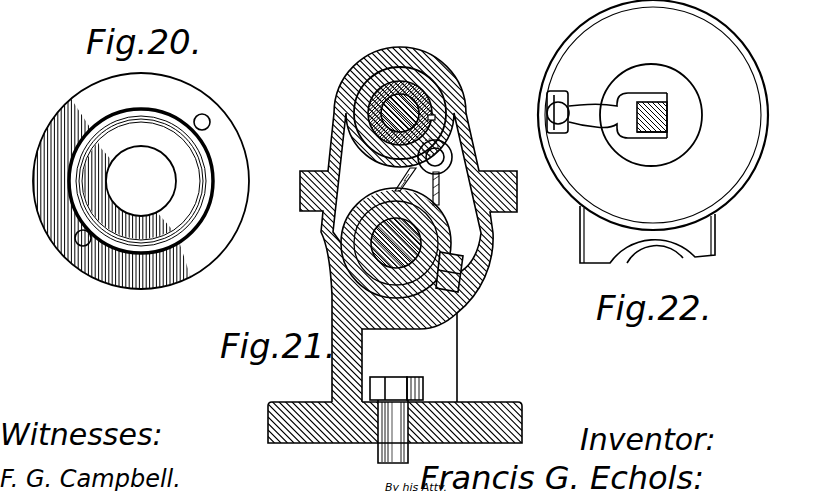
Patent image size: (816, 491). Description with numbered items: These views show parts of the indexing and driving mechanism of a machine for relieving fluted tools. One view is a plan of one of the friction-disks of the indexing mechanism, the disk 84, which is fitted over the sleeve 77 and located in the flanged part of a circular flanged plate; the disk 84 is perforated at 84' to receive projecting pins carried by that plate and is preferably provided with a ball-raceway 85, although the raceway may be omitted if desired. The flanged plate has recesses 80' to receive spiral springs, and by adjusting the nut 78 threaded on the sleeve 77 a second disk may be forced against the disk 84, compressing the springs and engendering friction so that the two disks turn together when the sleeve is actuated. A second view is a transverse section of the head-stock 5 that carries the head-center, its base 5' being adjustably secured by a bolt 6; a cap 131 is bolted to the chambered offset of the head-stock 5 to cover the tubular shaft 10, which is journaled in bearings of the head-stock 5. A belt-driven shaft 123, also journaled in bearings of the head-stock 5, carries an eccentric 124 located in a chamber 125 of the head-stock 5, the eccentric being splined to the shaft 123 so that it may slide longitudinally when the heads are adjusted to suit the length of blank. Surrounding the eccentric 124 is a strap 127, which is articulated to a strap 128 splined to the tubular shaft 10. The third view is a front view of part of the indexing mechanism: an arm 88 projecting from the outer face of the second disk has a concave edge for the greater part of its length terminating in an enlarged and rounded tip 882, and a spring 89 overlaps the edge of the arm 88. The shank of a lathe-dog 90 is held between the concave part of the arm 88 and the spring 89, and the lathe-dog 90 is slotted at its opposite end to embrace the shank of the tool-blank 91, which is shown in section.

In FIG. 21, the head-stock 5 is at (409, 357).
In FIG. 22, the head-stock 5 is at (667, 234).
In FIG. 21, the base 5' is at (414, 416).
In FIG. 21, the bolt 6 is at (423, 384).
In FIG. 21, the tubular shaft 10 is at (417, 100).
In FIG. 22, the sleeve 77 is at (673, 112).
In FIG. 22, the nut 78 is at (680, 86).
In FIG. 21, the recesses 80' is at (438, 12).
In FIG. 20, the disk 84 is at (148, 181).
In FIG. 22, the disk 84 is at (653, 115).
In FIG. 20, the perforations 84' is at (119, 205).
In FIG. 20, the ball-raceway 85 is at (93, 131).
In FIG. 22, the arm 88 is at (569, 108).
In FIG. 22, the tip 882 is at (549, 119).
In FIG. 22, the spring 89 is at (560, 93).
In FIG. 22, the lathe-dog 90 is at (592, 116).
In FIG. 22, the tool-blank 91 is at (662, 124).
In FIG. 21, the shaft 123 is at (403, 233).
In FIG. 21, the eccentric 124 is at (433, 241).
In FIG. 21, the chamber 125 is at (397, 136).
In FIG. 21, the strap 127 is at (334, 242).
In FIG. 21, the strap 128 is at (433, 97).
In FIG. 21, the cap 131 is at (469, 122).